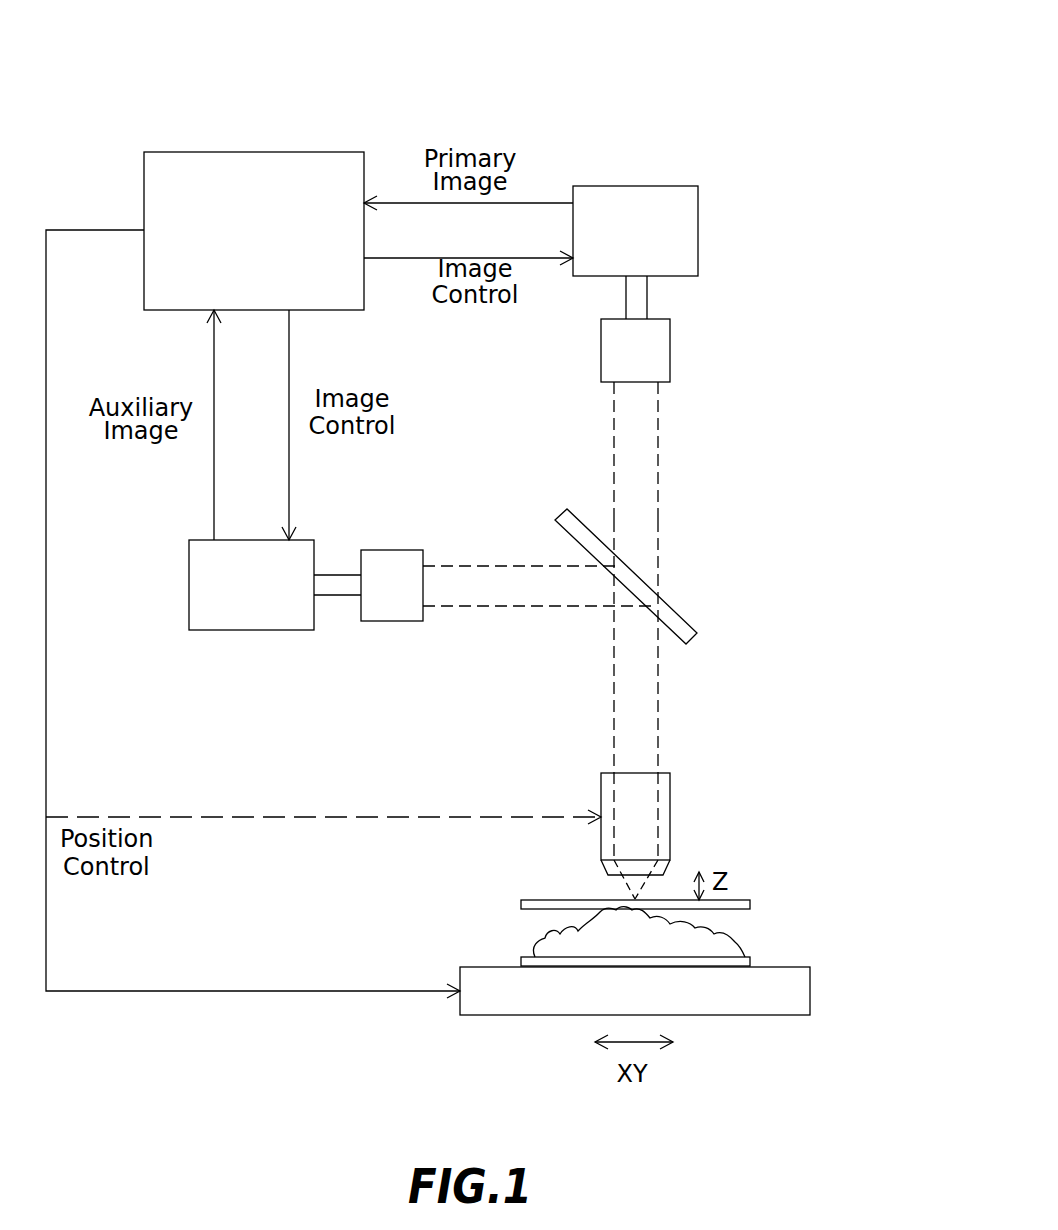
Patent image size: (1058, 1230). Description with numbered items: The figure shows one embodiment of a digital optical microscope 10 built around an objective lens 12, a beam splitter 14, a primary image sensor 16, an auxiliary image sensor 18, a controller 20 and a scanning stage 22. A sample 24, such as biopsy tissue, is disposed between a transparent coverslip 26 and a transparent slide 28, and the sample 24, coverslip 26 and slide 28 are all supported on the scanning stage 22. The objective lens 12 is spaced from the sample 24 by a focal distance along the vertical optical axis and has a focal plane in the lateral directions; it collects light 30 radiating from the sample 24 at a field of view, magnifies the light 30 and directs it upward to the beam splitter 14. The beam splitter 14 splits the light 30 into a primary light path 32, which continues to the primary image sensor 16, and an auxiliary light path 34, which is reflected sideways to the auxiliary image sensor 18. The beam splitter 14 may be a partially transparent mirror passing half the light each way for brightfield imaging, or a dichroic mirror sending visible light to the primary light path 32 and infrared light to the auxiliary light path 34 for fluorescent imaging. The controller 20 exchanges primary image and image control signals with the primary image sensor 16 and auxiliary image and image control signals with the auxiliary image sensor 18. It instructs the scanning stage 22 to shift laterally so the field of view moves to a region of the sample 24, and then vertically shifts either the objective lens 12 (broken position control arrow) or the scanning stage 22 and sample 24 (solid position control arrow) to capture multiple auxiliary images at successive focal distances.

The digital optical microscope 10 is at (200, 112).
The objective lens 12 is at (670, 800).
The beam splitter 14 is at (680, 613).
The primary image sensor 16 is at (698, 228).
The auxiliary image sensor 18 is at (252, 630).
The controller 20 is at (144, 187).
The scanning stage 22 is at (810, 988).
The sample 24 is at (738, 937).
The coverslip 26 is at (521, 903).
The slide 28 is at (521, 959).
The light 30 is at (658, 715).
The primary light path 32 is at (658, 436).
The auxiliary light path 34 is at (483, 566).